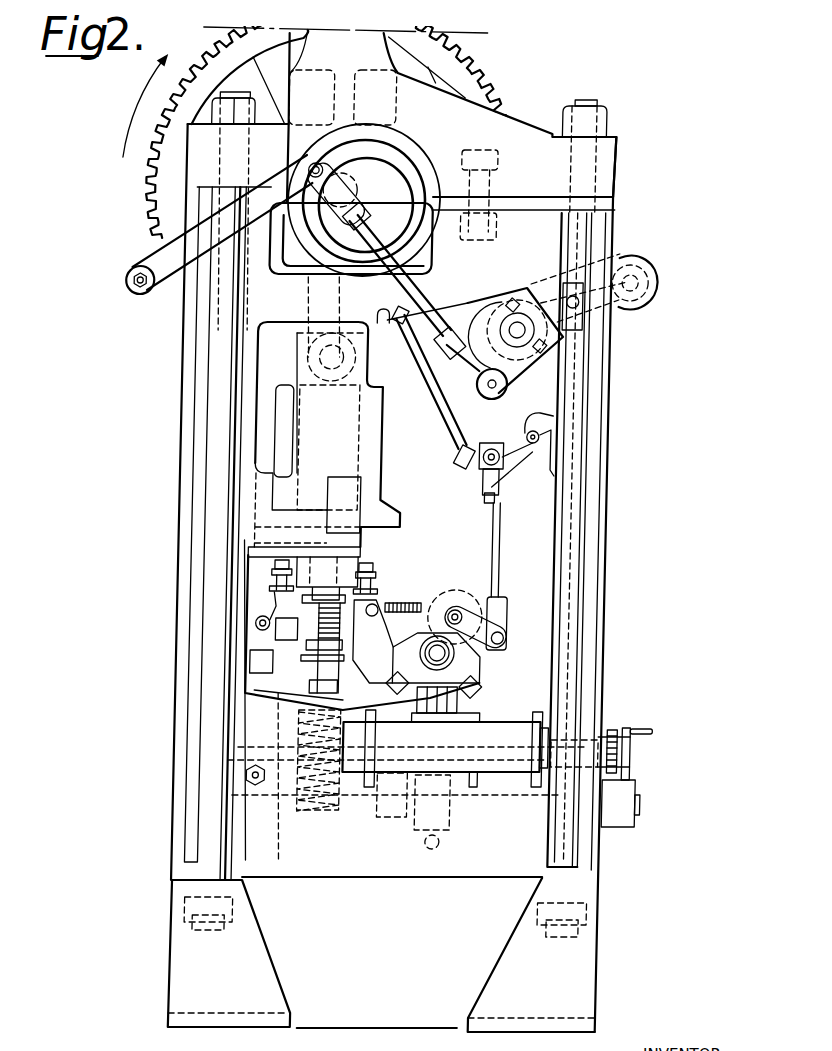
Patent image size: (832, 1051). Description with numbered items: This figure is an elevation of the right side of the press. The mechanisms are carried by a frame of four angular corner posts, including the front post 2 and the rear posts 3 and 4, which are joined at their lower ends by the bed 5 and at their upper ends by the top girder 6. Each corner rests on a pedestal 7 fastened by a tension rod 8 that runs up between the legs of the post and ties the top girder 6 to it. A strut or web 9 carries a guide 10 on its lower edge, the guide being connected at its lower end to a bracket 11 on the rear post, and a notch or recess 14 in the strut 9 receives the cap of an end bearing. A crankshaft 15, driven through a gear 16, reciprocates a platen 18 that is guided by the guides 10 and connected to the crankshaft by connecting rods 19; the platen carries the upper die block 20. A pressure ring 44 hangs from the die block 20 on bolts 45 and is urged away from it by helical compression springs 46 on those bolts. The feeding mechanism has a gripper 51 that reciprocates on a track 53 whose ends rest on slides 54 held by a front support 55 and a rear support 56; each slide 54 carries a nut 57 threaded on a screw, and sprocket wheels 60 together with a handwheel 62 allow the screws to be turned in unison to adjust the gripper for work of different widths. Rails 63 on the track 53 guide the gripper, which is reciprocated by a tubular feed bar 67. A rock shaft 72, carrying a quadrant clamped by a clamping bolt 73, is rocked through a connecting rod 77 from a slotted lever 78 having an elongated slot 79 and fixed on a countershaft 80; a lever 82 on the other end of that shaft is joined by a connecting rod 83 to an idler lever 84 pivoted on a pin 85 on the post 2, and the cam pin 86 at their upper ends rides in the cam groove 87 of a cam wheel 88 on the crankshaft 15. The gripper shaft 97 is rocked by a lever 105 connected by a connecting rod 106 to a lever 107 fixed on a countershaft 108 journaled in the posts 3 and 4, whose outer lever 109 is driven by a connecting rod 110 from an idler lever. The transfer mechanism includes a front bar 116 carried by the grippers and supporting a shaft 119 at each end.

The angular front post 2 is at (188, 789).
The angular rear post 3 is at (758, 117).
The angular rear post 4 is at (607, 651).
The lower girder or bed 5 is at (333, 478).
The top girder 6 is at (610, 165).
The pedestal 7 is at (186, 941).
The tension rod 8 is at (225, 513).
The strut or web 9 is at (386, 325).
The guide 10 is at (329, 421).
The bracket 11 is at (272, 486).
The notch or recess 14 is at (283, 270).
The crankshaft 15 is at (348, 184).
The gear 16 is at (152, 200).
The platen 18 is at (383, 448).
The connecting rod 19 is at (332, 299).
The upper die block 20 is at (354, 559).
The pressure ring 44 is at (316, 644).
The bolt 45 is at (283, 562).
The helical compression spring 46 is at (379, 585).
The gripper 51 is at (363, 632).
The track 53 is at (486, 703).
The slide 54 is at (483, 772).
The support 55 is at (387, 734).
The support 56 is at (512, 727).
The nut 57 is at (505, 721).
The sprocket wheel 60 is at (623, 728).
The handwheel 62 is at (640, 728).
The rail 63 is at (492, 685).
The tubular feed bar 67 is at (480, 655).
The rock shaft 72 is at (502, 810).
The clamping bolt 73 is at (449, 849).
The connecting rod 77 is at (586, 572).
The slotted lever 78 is at (650, 258).
The elongated slot 79 is at (657, 277).
The countershaft 80 is at (527, 289).
The lever 82 is at (512, 374).
The connecting rod 83 is at (430, 294).
The idler lever 84 is at (222, 222).
The pin 85 is at (128, 290).
The cam pin 86 is at (308, 166).
The cam groove 87 is at (398, 162).
The cam wheel 88 is at (364, 124).
The gripper shaft 97 is at (460, 608).
The lever 105 is at (494, 615).
The connecting rod 106 is at (508, 555).
The lever 107 is at (517, 437).
The countershaft 108 is at (541, 431).
The lever 109 is at (515, 466).
The connecting rod 110 is at (443, 404).
The front bar 116 is at (262, 661).
The shaft 119 is at (270, 617).